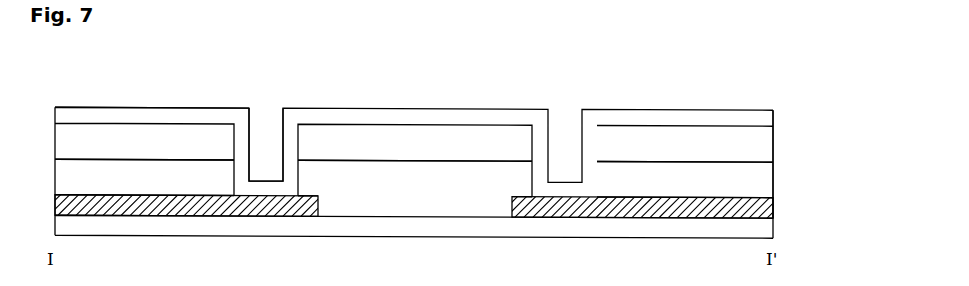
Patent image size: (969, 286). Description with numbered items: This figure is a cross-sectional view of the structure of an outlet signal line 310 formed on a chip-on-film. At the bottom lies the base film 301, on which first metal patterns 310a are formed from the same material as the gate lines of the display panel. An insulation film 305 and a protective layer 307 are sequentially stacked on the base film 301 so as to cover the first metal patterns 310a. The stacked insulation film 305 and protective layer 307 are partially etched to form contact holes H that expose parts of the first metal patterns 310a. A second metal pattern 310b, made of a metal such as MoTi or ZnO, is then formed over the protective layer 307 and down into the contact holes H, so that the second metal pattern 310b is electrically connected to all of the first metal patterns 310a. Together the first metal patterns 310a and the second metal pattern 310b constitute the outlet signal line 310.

The base film 301 is at (773, 228).
The first metal patterns 310a is at (775, 207).
The second metal pattern 310b is at (773, 116).
The outlet signal line 310 is at (855, 117).
The insulation film 305 is at (183, 167).
The protective layer 307 is at (99, 135).
The contact holes H is at (268, 139).